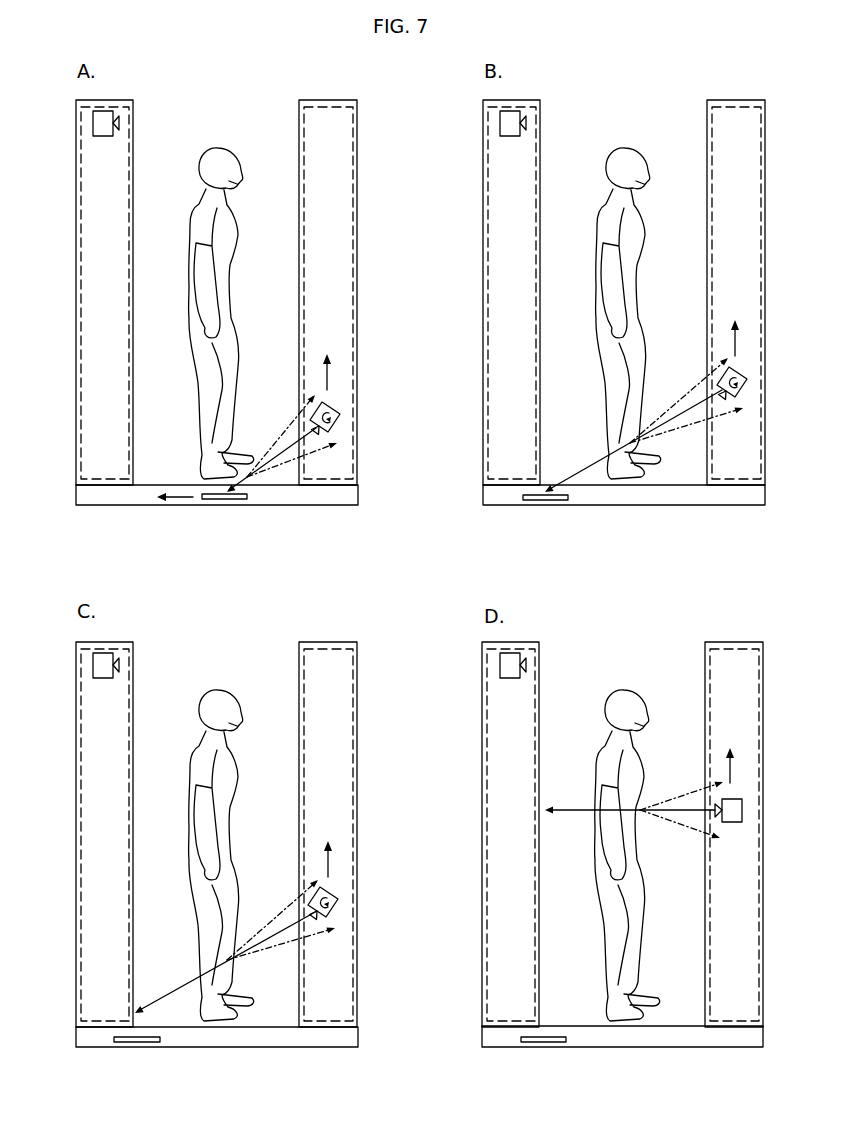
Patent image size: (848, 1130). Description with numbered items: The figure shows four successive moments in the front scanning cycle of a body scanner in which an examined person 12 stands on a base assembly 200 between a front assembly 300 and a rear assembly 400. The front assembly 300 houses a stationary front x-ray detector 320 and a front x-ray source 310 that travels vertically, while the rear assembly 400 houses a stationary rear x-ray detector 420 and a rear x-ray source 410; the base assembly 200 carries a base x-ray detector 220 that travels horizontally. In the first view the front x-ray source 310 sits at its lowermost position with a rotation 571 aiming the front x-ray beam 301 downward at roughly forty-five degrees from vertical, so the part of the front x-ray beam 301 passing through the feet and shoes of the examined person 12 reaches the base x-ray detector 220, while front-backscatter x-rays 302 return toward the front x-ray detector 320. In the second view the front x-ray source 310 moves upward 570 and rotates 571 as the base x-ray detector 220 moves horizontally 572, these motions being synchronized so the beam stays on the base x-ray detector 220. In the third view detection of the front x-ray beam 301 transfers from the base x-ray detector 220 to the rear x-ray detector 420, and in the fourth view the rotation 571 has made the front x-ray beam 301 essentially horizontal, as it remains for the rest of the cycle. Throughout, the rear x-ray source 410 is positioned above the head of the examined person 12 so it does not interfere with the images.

In FIG. 7A, the examined person 12 is at (221, 143).
In FIG. 7B, the examined person 12 is at (629, 143).
In FIG. 7C, the examined person 12 is at (221, 687).
In FIG. 7D, the examined person 12 is at (628, 687).
In FIG. 7A, the base assembly 200 is at (95, 509).
In FIG. 7B, the base assembly 200 is at (502, 509).
In FIG. 7C, the base assembly 200 is at (91, 1051).
In FIG. 7D, the base assembly 200 is at (499, 1050).
In FIG. 7A, the base x-ray detector 220 is at (223, 506).
In FIG. 7B, the base x-ray detector 220 is at (542, 507).
In FIG. 7C, the base x-ray detector 220 is at (132, 1048).
In FIG. 7D, the base x-ray detector 220 is at (548, 1048).
In FIG. 7A, the front assembly 300 is at (358, 122).
In FIG. 7B, the front assembly 300 is at (765, 123).
In FIG. 7C, the front assembly 300 is at (358, 664).
In FIG. 7D, the front assembly 300 is at (765, 664).
In FIG. 7A, the front x-ray beam 301 is at (276, 455).
In FIG. 7B, the front x-ray beam 301 is at (571, 473).
In FIG. 7C, the front x-ray beam 301 is at (163, 993).
In FIG. 7D, the front x-ray beam 301 is at (570, 806).
In FIG. 7A, the front-backscatter x-rays 302 is at (287, 427).
In FIG. 7B, the front-backscatter x-rays 302 is at (672, 396).
In FIG. 7C, the front-backscatter x-rays 302 is at (264, 914).
In FIG. 7D, the front-backscatter x-rays 302 is at (672, 797).
In FIG. 7A, the front x-ray source 310 is at (338, 409).
In FIG. 7B, the front x-ray source 310 is at (747, 375).
In FIG. 7C, the front x-ray source 310 is at (338, 898).
In FIG. 7D, the front x-ray source 310 is at (742, 808).
In FIG. 7A, the front x-ray detector 320 is at (342, 165).
In FIG. 7B, the front x-ray detector 320 is at (750, 167).
In FIG. 7C, the front x-ray detector 320 is at (342, 707).
In FIG. 7D, the front x-ray detector 320 is at (748, 707).
In FIG. 7A, the rear assembly 400 is at (140, 119).
In FIG. 7B, the rear assembly 400 is at (547, 122).
In FIG. 7C, the rear assembly 400 is at (140, 662).
In FIG. 7D, the rear assembly 400 is at (546, 662).
In FIG. 7A, the rear x-ray source 410 is at (97, 125).
In FIG. 7B, the rear x-ray source 410 is at (503, 123).
In FIG. 7C, the rear x-ray source 410 is at (95, 665).
In FIG. 7D, the rear x-ray source 410 is at (502, 665).
In FIG. 7A, the rear x-ray detector 420 is at (122, 165).
In FIG. 7B, the rear x-ray detector 420 is at (529, 168).
In FIG. 7C, the rear x-ray detector 420 is at (121, 709).
In FIG. 7D, the rear x-ray detector 420 is at (527, 709).
In FIG. 7A, the upward movement 570 is at (332, 368).
In FIG. 7B, the upward movement 570 is at (745, 330).
In FIG. 7C, the upward movement 570 is at (332, 852).
In FIG. 7D, the upward movement 570 is at (738, 765).
In FIG. 7A, the rotation 571 is at (333, 424).
In FIG. 7B, the rotation 571 is at (745, 389).
In FIG. 7C, the rotation 571 is at (337, 912).
In FIG. 7A, the horizontal movement 572 is at (175, 504).